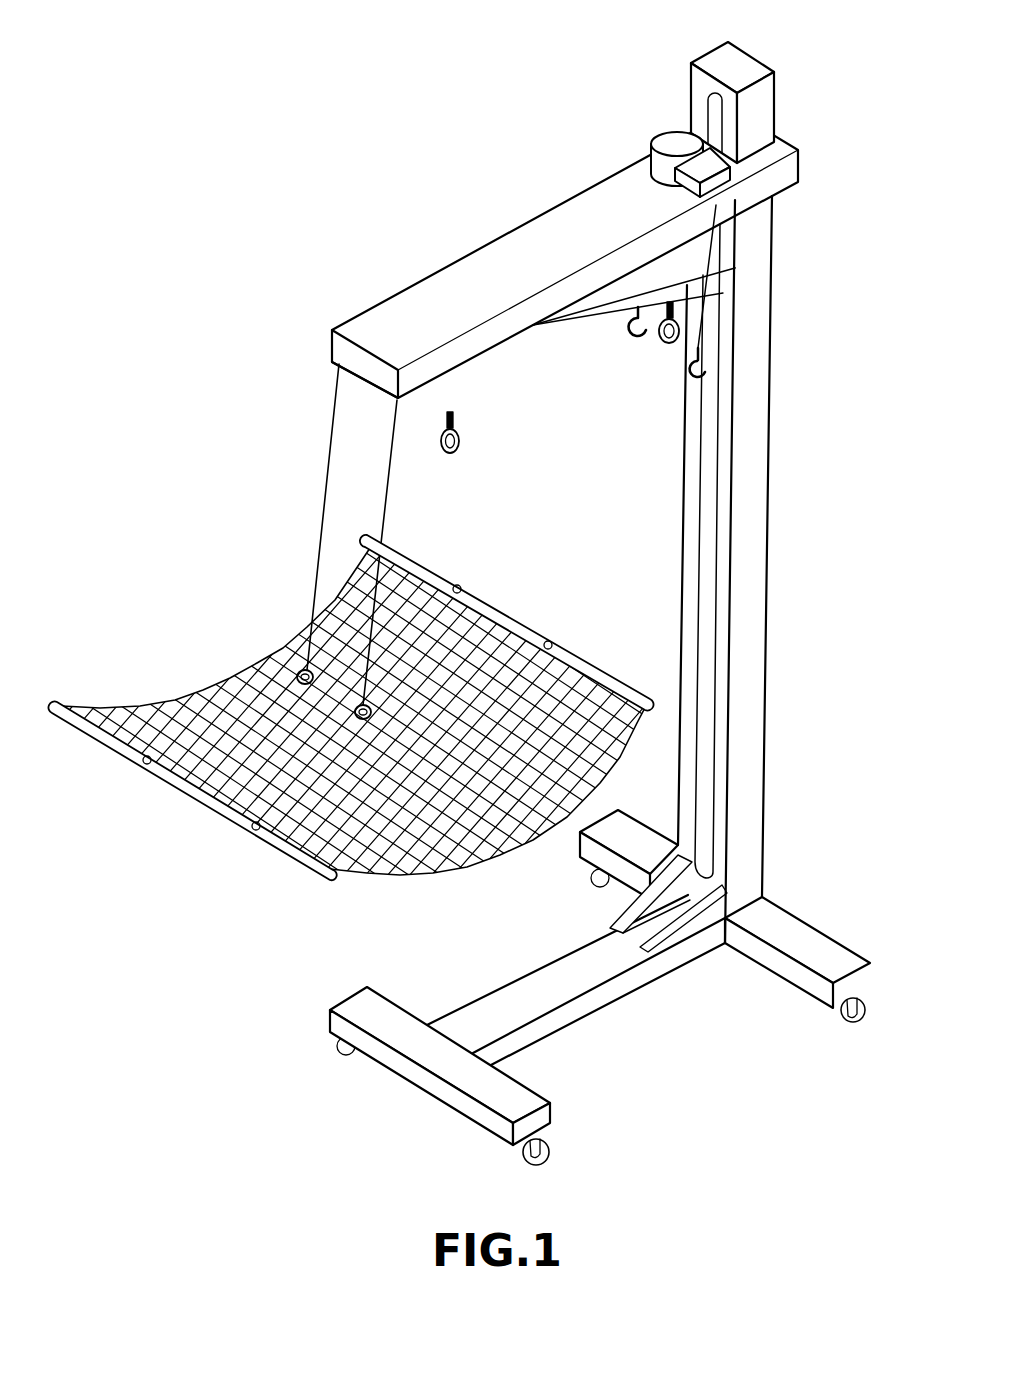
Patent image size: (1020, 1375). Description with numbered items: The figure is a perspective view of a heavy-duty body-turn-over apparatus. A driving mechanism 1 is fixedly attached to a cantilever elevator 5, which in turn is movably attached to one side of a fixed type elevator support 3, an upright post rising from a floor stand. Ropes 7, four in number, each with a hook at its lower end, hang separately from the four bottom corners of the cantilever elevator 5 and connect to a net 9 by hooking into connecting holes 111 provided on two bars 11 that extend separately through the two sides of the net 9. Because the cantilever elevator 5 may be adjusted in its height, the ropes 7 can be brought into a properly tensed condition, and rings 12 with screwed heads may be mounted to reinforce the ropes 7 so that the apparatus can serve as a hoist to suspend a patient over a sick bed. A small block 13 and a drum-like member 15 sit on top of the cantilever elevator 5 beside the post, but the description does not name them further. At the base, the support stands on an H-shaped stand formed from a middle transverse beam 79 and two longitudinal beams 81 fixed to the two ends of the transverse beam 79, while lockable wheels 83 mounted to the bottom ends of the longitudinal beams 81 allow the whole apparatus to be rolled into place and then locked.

The driving mechanism 1 is at (467, 267).
The fixed type elevator support 3 is at (758, 432).
The cantilever elevator 5 is at (633, 283).
The ropes 7 is at (328, 458).
The net 9 is at (273, 775).
The bars 11 is at (298, 857).
The connecting holes 111 is at (256, 831).
The rings with screwed head 12 is at (448, 456).
The switch block 13 is at (707, 160).
The winch drum 15 is at (665, 130).
The middle transverse beam 79 is at (613, 985).
The longitudinal beams 81 is at (807, 933).
The lockable wheels 83 is at (846, 1006).